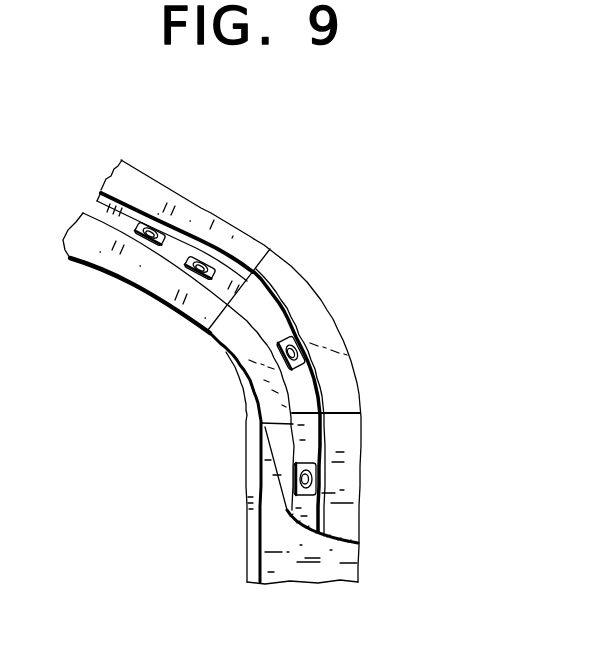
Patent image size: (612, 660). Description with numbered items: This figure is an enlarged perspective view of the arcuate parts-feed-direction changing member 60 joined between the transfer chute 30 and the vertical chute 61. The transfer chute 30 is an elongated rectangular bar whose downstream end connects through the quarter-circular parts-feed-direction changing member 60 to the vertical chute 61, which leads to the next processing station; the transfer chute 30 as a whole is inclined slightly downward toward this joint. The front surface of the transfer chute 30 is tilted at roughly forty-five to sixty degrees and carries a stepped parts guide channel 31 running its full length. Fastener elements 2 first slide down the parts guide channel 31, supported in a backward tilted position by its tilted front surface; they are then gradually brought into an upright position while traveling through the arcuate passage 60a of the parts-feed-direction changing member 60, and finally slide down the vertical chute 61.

The fastener element 2 is at (204, 282).
The transfer chute 30 is at (188, 218).
The parts guide channel 31 is at (147, 207).
The parts-feed-direction changing member 60 is at (333, 362).
The arcuate passage 60a is at (276, 320).
The vertical chute 61 is at (350, 490).